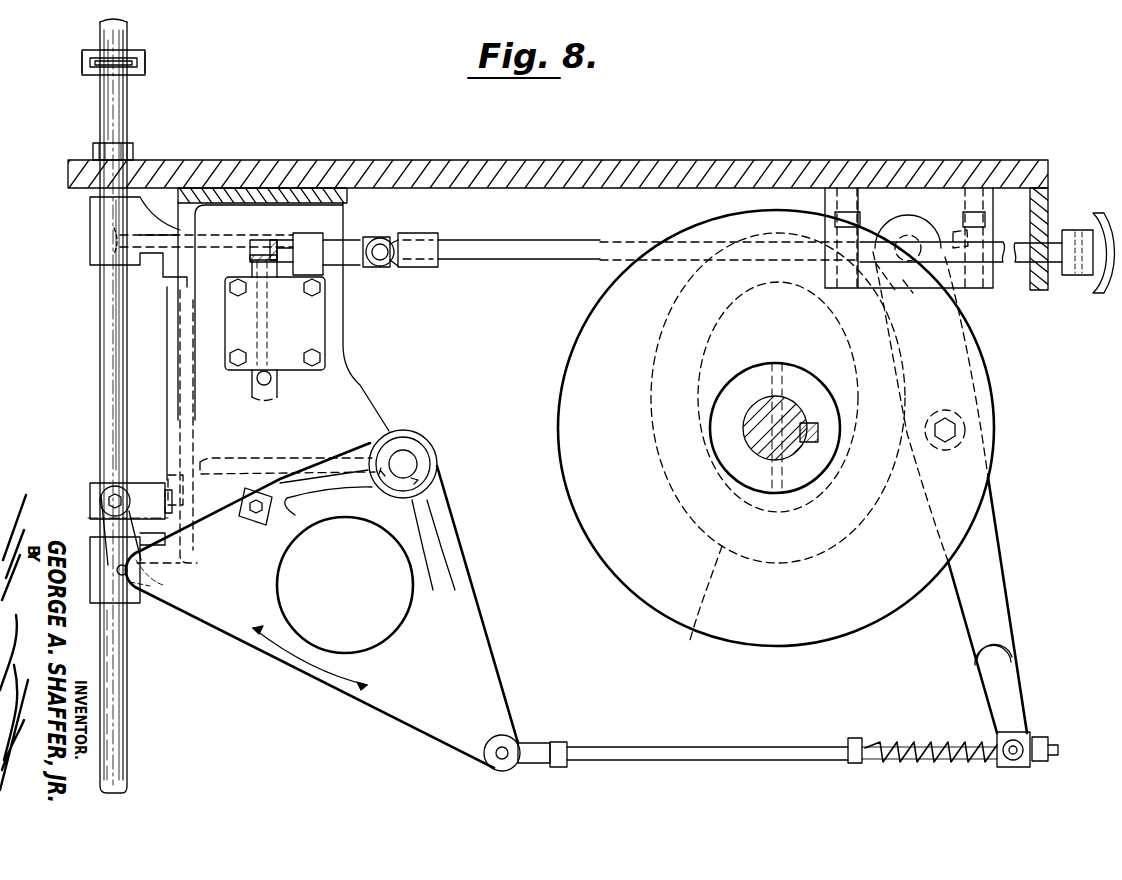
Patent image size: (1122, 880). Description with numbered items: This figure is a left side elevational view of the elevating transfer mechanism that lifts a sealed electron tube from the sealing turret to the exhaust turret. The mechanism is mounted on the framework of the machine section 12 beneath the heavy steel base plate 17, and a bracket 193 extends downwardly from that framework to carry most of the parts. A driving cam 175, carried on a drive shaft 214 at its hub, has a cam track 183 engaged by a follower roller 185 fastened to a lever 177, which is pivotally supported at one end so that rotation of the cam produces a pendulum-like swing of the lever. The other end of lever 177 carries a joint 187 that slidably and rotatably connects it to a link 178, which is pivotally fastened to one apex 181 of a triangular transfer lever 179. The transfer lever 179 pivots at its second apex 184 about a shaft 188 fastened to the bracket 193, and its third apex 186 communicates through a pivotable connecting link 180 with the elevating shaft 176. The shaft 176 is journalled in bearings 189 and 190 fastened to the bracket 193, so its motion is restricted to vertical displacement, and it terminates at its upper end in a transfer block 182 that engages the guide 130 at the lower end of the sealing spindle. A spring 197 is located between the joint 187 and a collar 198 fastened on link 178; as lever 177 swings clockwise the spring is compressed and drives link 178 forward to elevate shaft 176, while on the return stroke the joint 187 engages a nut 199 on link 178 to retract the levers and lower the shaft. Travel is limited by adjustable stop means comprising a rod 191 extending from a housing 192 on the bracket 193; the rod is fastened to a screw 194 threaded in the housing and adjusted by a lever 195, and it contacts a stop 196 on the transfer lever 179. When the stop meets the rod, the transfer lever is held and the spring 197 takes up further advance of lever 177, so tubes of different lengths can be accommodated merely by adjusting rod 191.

The machine section 12 is at (662, 165).
The base plate 17 is at (496, 170).
The guide 130 is at (133, 62).
The transfer block 182 is at (85, 70).
The bearing 190 is at (93, 238).
The elevating shaft 176 is at (112, 386).
The connecting link 180 is at (112, 523).
The bearing 189 is at (135, 603).
The third apex 186 is at (137, 587).
The stop 196 is at (254, 505).
The shaft 188 is at (408, 464).
The second apex 184 is at (442, 482).
The triangular transfer lever 179 is at (476, 680).
The apex 181 is at (500, 728).
The link 178 is at (742, 752).
The collar 198 is at (860, 740).
The spring 197 is at (930, 738).
The joint 187 is at (1028, 736).
The nut 199 is at (1046, 752).
The lever 177 is at (996, 552).
The follower roller 185 is at (962, 446).
The driving cam 175 is at (988, 406).
The shaft 214 is at (786, 412).
The cam track 183 is at (692, 630).
The lever 195 is at (542, 250).
The housing 192 is at (325, 336).
The bracket 193 is at (362, 392).
The screw 194 is at (258, 352).
The rod 191 is at (273, 382).